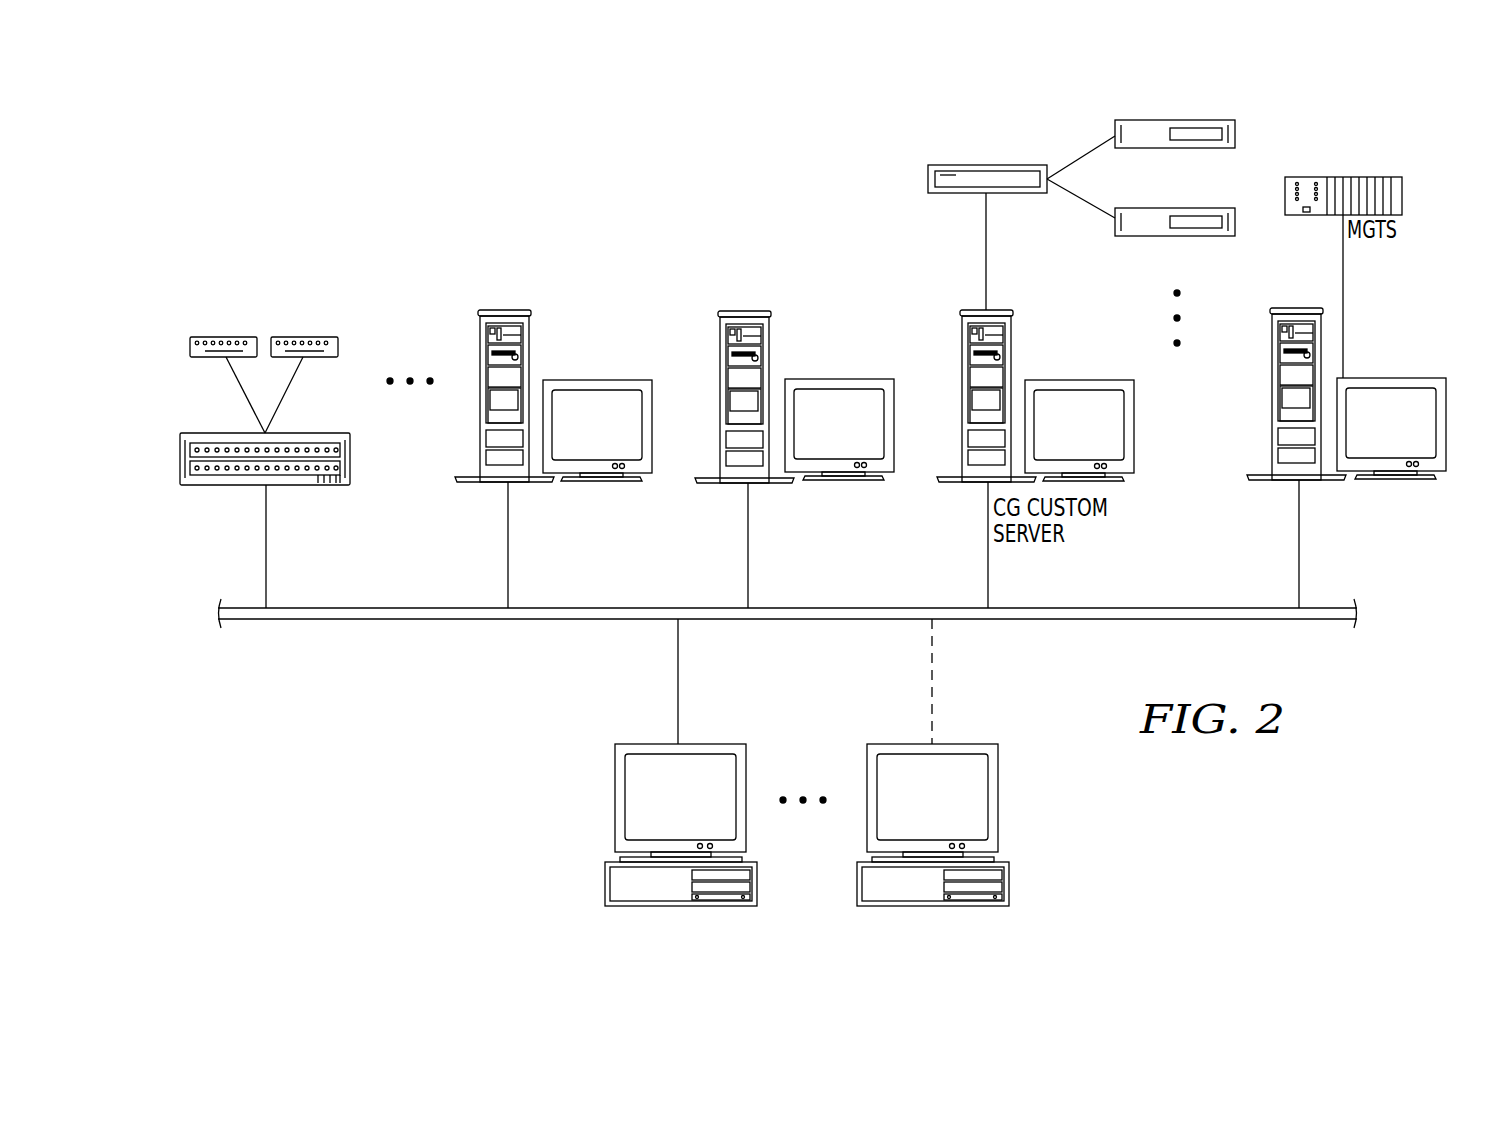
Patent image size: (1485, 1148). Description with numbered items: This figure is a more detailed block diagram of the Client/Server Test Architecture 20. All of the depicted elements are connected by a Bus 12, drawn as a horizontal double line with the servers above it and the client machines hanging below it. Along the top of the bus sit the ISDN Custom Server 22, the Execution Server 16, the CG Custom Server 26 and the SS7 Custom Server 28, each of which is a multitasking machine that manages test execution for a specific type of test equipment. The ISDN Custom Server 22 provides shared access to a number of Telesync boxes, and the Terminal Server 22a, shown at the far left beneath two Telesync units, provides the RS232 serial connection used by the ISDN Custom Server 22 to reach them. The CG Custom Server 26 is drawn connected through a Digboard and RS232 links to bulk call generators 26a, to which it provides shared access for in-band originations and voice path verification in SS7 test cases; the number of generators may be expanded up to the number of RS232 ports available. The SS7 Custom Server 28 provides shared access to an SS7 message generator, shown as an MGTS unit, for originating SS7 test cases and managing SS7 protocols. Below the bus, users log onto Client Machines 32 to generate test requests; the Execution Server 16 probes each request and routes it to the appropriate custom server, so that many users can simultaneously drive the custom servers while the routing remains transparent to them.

The Client/Server Test Architecture 20 is at (470, 190).
The Bus 12 is at (465, 607).
The Terminal Server 22a is at (336, 292).
The ISDN Custom Server 22 is at (578, 347).
The Execution Server 16 is at (818, 347).
The CG Custom Server 26 is at (987, 164).
The bulk call generators 26a is at (1237, 134).
The SS7 Custom Server 28 is at (1428, 345).
The Client Machine 32 is at (628, 722).